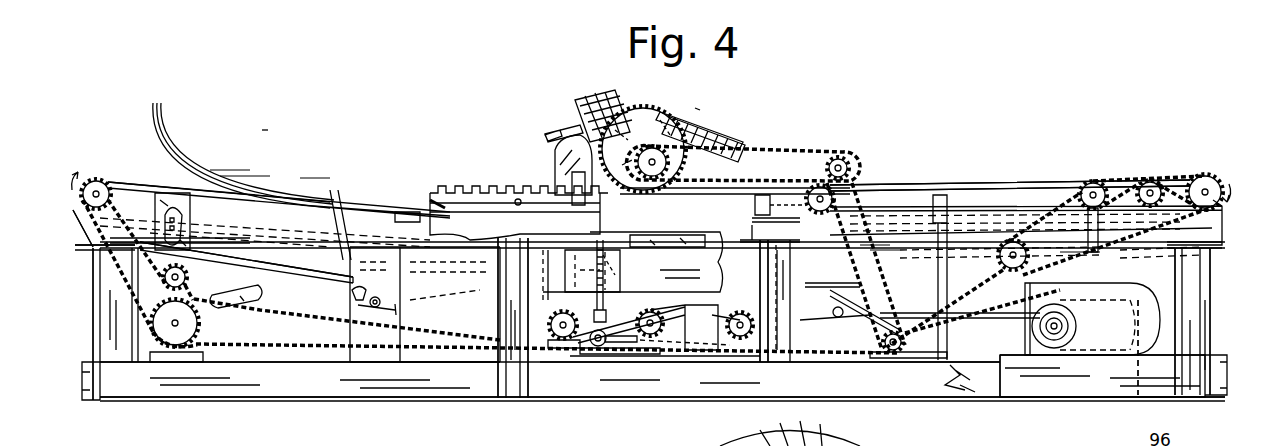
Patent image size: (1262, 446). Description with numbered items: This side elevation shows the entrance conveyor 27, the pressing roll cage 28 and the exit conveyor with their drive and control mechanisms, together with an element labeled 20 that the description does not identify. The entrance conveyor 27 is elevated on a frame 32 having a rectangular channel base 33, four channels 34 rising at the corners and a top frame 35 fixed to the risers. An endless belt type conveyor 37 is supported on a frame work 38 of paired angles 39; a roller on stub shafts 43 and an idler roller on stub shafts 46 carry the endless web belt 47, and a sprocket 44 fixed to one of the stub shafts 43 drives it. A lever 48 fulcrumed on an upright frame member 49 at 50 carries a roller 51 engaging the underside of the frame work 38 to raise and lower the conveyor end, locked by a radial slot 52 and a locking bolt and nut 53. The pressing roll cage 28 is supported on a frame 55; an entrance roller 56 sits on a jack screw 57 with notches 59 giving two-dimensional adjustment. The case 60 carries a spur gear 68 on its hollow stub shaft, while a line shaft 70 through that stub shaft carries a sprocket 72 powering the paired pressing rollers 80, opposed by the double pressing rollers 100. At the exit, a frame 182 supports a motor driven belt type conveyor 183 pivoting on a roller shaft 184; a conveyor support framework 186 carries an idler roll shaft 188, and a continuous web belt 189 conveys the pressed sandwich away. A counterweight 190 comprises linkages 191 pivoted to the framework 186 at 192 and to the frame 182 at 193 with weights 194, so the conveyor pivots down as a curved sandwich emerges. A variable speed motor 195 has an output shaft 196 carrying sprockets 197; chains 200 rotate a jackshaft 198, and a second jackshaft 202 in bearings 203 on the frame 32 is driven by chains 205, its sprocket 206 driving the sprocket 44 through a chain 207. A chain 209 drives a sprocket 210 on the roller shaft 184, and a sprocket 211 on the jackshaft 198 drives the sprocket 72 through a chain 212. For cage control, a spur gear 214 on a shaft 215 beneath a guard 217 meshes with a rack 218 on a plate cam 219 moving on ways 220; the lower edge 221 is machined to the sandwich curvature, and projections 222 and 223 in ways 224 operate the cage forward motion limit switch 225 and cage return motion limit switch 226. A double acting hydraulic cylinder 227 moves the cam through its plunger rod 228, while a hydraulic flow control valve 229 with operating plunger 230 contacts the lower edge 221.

The sheet guide 20 is at (189, 153).
The entrance conveyor 27 is at (269, 118).
The pressing roll cage 28 is at (705, 104).
The frame 32 is at (334, 408).
The rectangular channel base 33 is at (410, 390).
The channels 34 is at (103, 312).
The top frame 35 is at (88, 245).
The endless belt type conveyor 37 is at (144, 185).
The frame work 38 is at (303, 261).
The angles 39 is at (345, 250).
The stub shafts 43 is at (95, 190).
The sprocket 44 is at (104, 182).
The stub shafts 46 is at (512, 300).
The endless web belt 47 is at (165, 193).
The lever 48 is at (218, 294).
The upright frame member 49 is at (352, 327).
The fulcrum 50 is at (395, 308).
The roller 51 is at (493, 318).
The radial slot 52 is at (340, 303).
The locking bolt and nut 53 is at (376, 308).
The frame 55 is at (619, 405).
The entrance roller 56 is at (612, 256).
The jack screw 57 is at (600, 346).
The notches 59 is at (617, 269).
The case 60 is at (723, 127).
The spur gear 68 is at (640, 118).
The line shaft 70 is at (654, 146).
The sprocket 72 is at (728, 138).
The paired pressing rollers 80 is at (610, 108).
The double pressing rollers 100 is at (732, 158).
The frame 182 is at (1023, 410).
The motor driven belt type conveyor 183 is at (1048, 182).
The roller shaft 184 is at (1190, 180).
The conveyor support framework 186 is at (915, 240).
The idler roll shaft 188 is at (775, 192).
The continuous web belt 189 is at (980, 187).
The counterweight 190 is at (816, 284).
The linkages 191 is at (833, 322).
The pivot point 192 is at (762, 270).
The pivot 193 is at (838, 308).
The weights 194 is at (952, 395).
The variable speed motor 195 is at (1080, 355).
The output shaft 196 is at (1145, 290).
The sprockets 197 is at (1140, 380).
The jackshaft 198 is at (893, 352).
The chains 200 is at (957, 313).
The second jackshaft 202 is at (179, 322).
The bearings 203 is at (205, 362).
The chains 205 is at (335, 352).
The sprocket 206 is at (168, 335).
The chain 207 is at (180, 342).
The chain 209 is at (1058, 280).
The sprocket 210 is at (1207, 186).
The sprocket 211 is at (880, 360).
The chain 212 is at (845, 172).
The spur gear 214 is at (580, 133).
The shaft 215 is at (572, 172).
The guard 217 is at (556, 152).
The rack 218 is at (445, 190).
The plate cam 219 is at (410, 212).
The ways 220 is at (656, 258).
The lower edge 221 is at (485, 250).
The projection 222 is at (518, 199).
The projection 223 is at (500, 193).
The ways 224 is at (428, 208).
The cage forward motion limit switch 225 is at (755, 200).
The cage return motion limit switch 226 is at (753, 219).
The double acting hydraulic cylinder 227 is at (910, 205).
The plunger rod 228 is at (757, 226).
The hydraulic flow control valve 229 is at (572, 283).
The operating plunger 230 is at (606, 260).